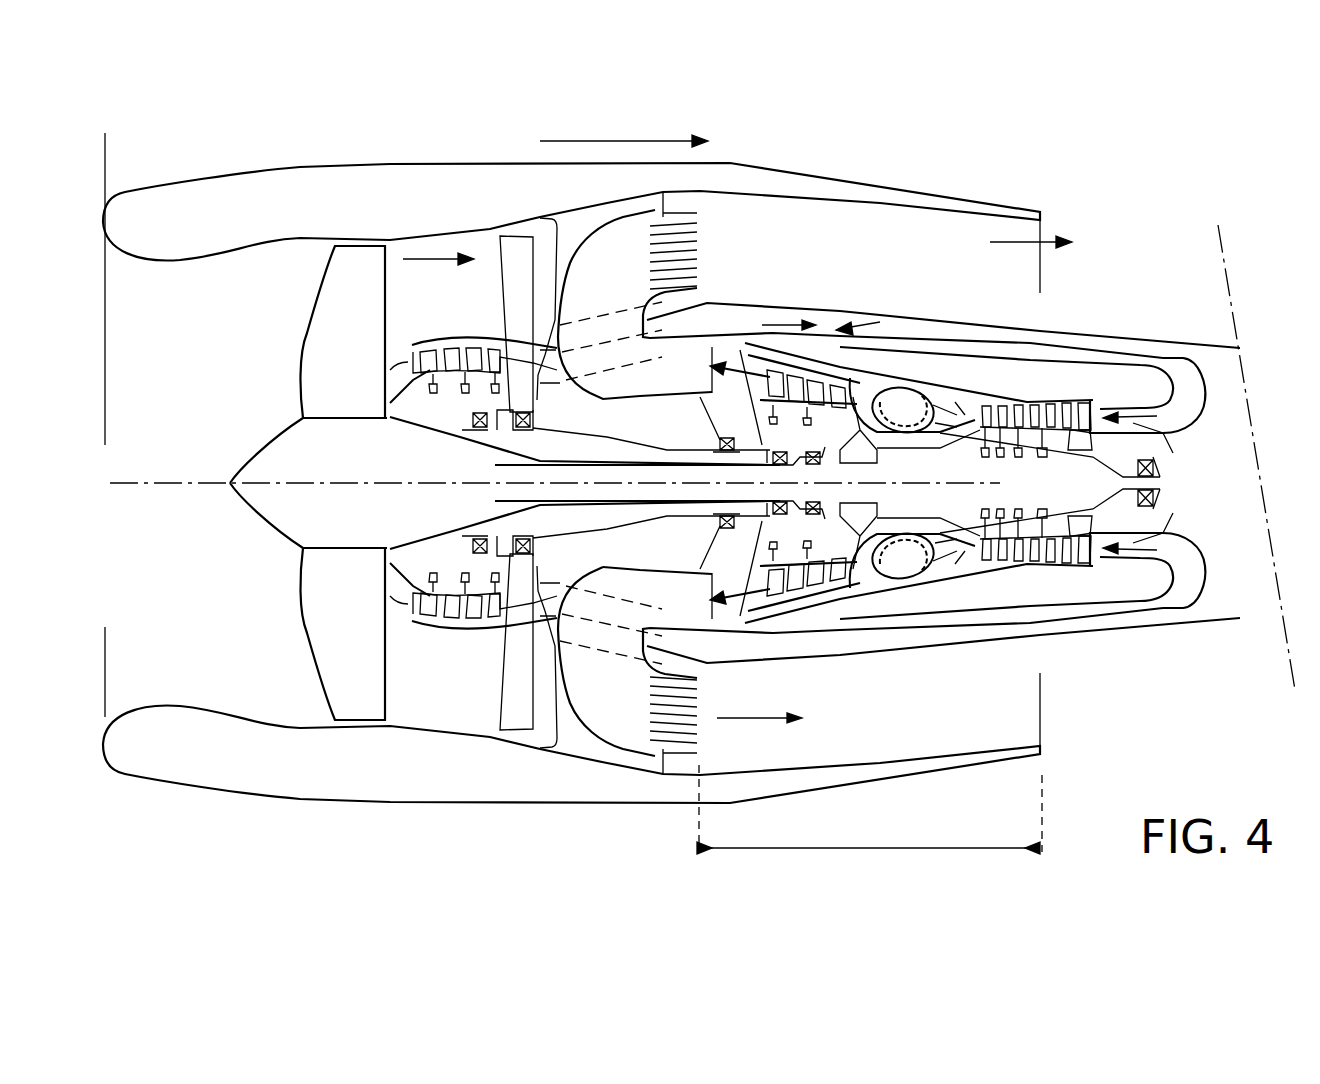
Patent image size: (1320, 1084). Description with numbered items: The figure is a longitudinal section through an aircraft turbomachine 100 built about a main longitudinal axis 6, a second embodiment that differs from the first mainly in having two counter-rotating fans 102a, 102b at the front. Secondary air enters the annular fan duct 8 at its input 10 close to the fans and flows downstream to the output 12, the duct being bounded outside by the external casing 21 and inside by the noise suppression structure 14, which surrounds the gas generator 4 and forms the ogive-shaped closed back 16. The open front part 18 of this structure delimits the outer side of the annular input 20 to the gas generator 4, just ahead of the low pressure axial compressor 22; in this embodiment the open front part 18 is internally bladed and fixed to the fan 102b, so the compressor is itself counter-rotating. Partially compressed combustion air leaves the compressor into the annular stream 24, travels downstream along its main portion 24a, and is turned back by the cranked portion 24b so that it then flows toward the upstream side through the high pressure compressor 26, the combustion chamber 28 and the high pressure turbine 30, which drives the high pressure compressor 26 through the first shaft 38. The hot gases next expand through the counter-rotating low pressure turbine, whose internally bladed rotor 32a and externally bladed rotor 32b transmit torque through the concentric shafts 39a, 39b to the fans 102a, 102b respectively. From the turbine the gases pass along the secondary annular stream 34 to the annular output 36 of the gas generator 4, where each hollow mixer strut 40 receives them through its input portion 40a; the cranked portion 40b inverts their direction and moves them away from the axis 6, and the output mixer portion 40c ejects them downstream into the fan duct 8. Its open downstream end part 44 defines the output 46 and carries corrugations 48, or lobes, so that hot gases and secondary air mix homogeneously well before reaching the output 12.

The gas generator 4 is at (1028, 598).
The main longitudinal axis 6 is at (133, 487).
The annular fan duct 8 is at (943, 233).
The input 10 is at (107, 280).
The output 12 is at (1044, 233).
The noise suppression structure 14 is at (1040, 328).
The ogive-shaped closed back 16 is at (1240, 570).
The open front part 18 is at (423, 347).
The annular input 20 is at (390, 403).
The external casing 21 is at (407, 193).
The low pressure axial compressor 22 is at (440, 374).
The annular stream 24 is at (865, 325).
The main portion 24a is at (920, 338).
The cranked portion 24b is at (1193, 390).
The high pressure compressor 26 is at (1078, 557).
The combustion chamber 28 is at (940, 580).
The high pressure turbine 30 is at (923, 572).
The internally bladed rotor 32a is at (830, 447).
The externally bladed rotor 32b is at (840, 363).
The secondary annular stream 34 is at (727, 383).
The annular output 36 is at (713, 373).
The first shaft 38 is at (920, 513).
The concentric shaft 39a is at (580, 507).
The concentric shaft 39b is at (667, 450).
The hollow mixer strut 40 is at (580, 408).
The input portion 40a is at (677, 573).
The cranked portion 40b is at (545, 656).
The output mixer portion 40c is at (623, 743).
The open downstream end part 44 is at (687, 747).
The output 46 is at (703, 687).
The corrugations 48 is at (700, 743).
The turbomachine 100 is at (290, 150).
The counter-rotating fan 102a is at (313, 635).
The counter-rotating fan 102b is at (505, 695).